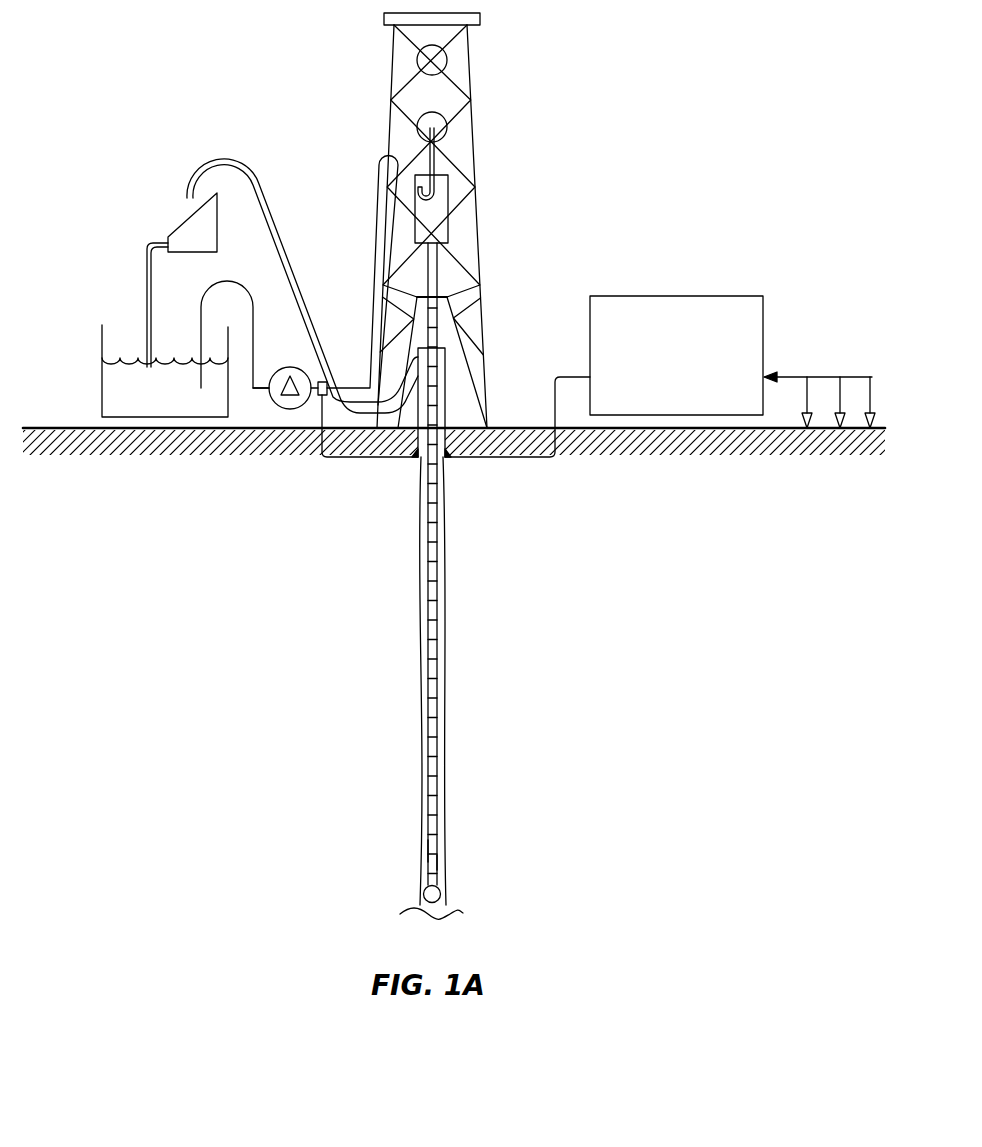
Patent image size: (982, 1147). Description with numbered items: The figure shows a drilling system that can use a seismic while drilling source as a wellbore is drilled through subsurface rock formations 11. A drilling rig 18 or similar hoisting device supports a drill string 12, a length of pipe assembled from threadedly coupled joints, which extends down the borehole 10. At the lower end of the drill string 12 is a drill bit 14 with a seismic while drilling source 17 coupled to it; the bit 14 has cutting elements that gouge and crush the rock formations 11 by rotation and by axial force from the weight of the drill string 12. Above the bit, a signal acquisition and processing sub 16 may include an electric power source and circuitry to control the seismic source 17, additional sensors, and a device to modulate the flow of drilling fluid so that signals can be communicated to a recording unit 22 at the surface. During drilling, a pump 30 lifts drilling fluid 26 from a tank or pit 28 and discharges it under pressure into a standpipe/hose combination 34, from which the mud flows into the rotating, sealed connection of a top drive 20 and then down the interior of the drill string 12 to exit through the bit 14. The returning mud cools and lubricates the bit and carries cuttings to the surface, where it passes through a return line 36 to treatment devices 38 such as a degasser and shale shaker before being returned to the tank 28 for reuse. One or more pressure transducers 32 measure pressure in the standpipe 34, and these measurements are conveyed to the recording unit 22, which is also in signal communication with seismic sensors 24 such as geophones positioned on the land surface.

The borehole 10 is at (418, 787).
The rock formations 11 is at (591, 696).
The drill string 12 is at (440, 562).
The drill bit 14 is at (440, 890).
The signal acquisition and processing sub 16 is at (430, 852).
The seismic while drilling source 17 is at (440, 862).
The drilling rig 18 is at (472, 100).
The top drive 20 is at (450, 218).
The recording unit 22 is at (731, 310).
The seismic sensors 24 is at (802, 430).
The drilling fluid 26 is at (118, 406).
The tank or pit 28 is at (102, 395).
The pump 30 is at (289, 409).
The pressure transducer 32 is at (319, 398).
The standpipe/hose combination 34 is at (373, 239).
The return pipe 36 is at (268, 183).
The treatment devices 38 is at (217, 223).